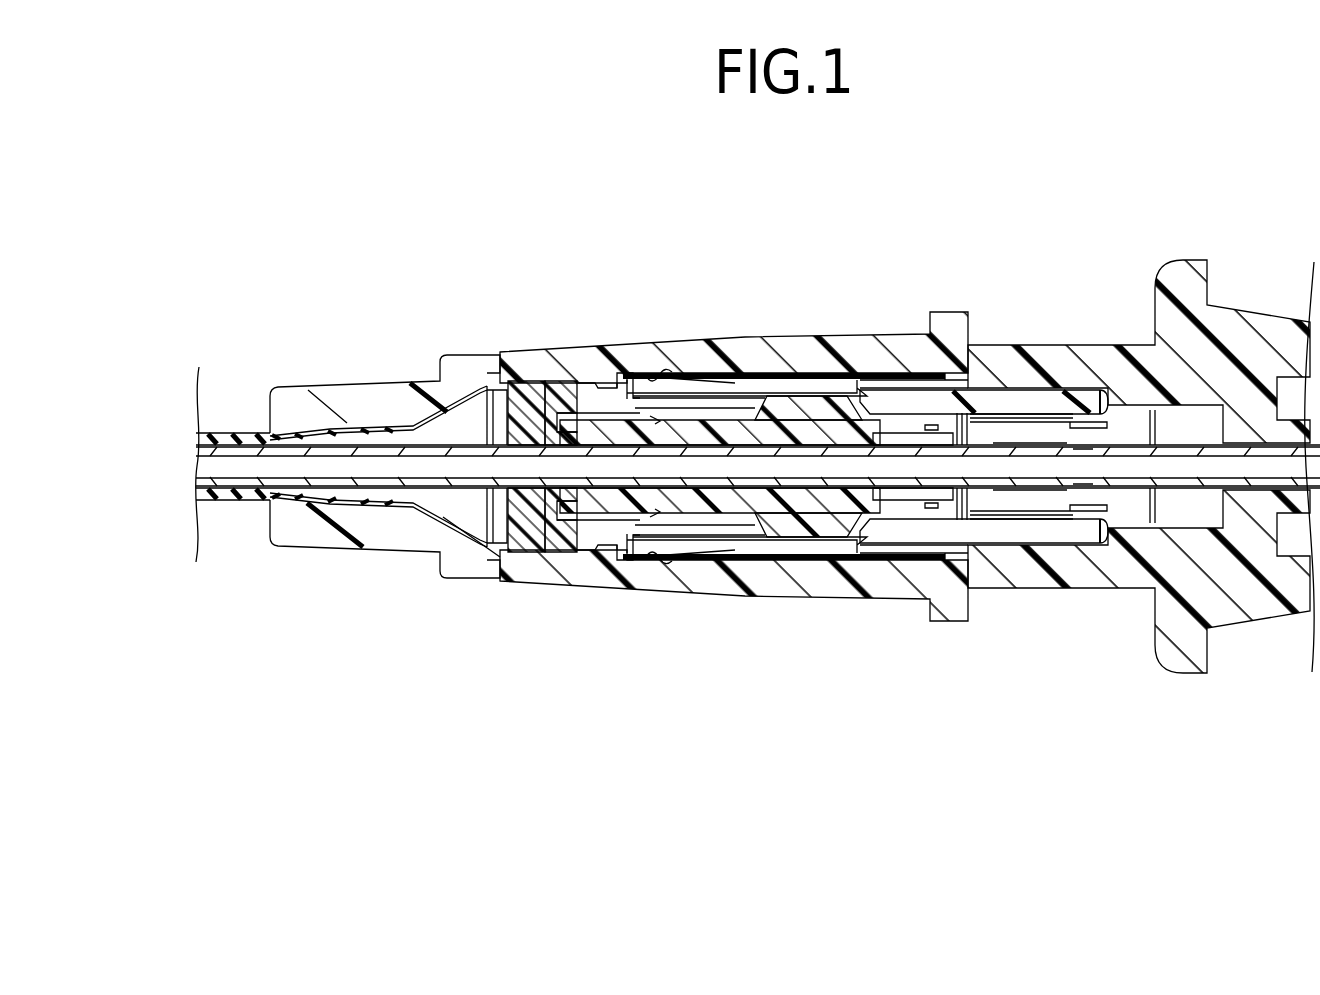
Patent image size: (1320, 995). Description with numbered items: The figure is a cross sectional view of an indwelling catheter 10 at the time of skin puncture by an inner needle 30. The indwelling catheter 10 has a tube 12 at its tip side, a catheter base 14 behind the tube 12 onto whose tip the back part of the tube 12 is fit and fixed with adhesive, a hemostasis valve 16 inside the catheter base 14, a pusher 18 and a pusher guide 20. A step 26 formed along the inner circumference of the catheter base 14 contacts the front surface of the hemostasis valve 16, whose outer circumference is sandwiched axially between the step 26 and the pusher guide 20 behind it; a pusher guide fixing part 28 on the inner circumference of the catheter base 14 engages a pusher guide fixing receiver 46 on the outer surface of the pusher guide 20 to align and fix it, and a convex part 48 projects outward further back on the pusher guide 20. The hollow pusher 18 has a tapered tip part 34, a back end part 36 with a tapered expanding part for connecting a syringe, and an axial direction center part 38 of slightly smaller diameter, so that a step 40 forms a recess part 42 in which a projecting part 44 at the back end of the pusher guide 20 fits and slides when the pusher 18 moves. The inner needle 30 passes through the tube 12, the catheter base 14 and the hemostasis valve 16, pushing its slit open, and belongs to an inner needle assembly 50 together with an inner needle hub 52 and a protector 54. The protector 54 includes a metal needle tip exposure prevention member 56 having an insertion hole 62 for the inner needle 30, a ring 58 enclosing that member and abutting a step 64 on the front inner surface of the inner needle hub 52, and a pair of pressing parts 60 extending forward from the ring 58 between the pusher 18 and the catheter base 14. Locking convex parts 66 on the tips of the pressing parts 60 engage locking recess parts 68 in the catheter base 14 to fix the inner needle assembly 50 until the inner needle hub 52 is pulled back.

The indwelling catheter 10 is at (974, 231).
The tube 12 is at (228, 432).
The catheter base 14 is at (376, 379).
The hemostasis valve 16 is at (523, 390).
The pusher 18 is at (790, 375).
The pusher guide 20 is at (564, 567).
The step 26 is at (520, 554).
The pusher guide fixing part 28 is at (595, 382).
The inner needle 30 is at (905, 480).
The tip part 34 is at (550, 420).
The back end part 36 is at (797, 525).
The axial direction center part 38 is at (714, 516).
The step 40 is at (647, 515).
The recess part 42 is at (713, 379).
The projecting part 44 is at (658, 560).
The pusher guide fixing receiver 46 is at (567, 432).
The convex part 48 is at (638, 376).
The inner needle assembly 50 is at (1184, 676).
The inner needle hub 52 is at (1140, 577).
The protector 54 is at (951, 371).
The needle tip exposure prevention member 56 is at (1017, 420).
The ring 58 is at (1055, 532).
The pressing part 60 is at (755, 382).
The insertion hole 62 is at (1082, 452).
The step 64 is at (1103, 537).
The locking convex part 66 is at (652, 378).
The locking recess part 68 is at (655, 419).